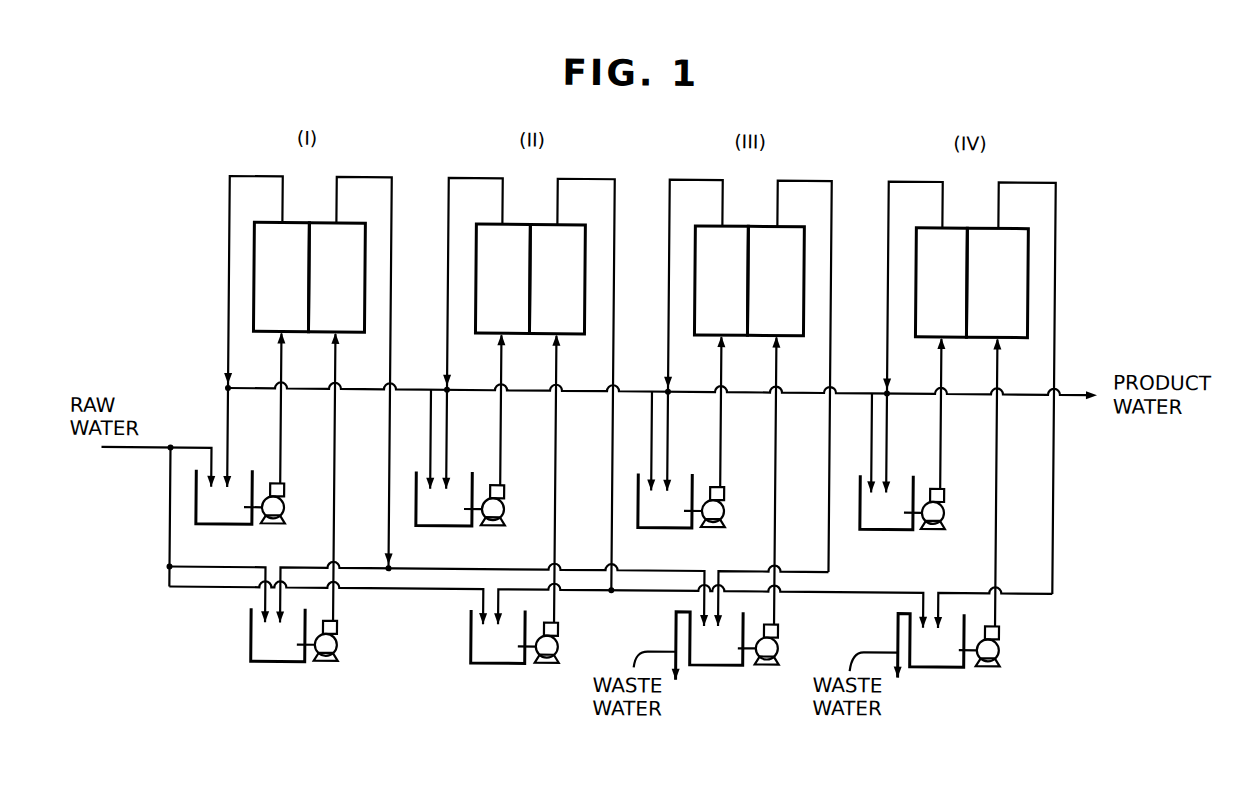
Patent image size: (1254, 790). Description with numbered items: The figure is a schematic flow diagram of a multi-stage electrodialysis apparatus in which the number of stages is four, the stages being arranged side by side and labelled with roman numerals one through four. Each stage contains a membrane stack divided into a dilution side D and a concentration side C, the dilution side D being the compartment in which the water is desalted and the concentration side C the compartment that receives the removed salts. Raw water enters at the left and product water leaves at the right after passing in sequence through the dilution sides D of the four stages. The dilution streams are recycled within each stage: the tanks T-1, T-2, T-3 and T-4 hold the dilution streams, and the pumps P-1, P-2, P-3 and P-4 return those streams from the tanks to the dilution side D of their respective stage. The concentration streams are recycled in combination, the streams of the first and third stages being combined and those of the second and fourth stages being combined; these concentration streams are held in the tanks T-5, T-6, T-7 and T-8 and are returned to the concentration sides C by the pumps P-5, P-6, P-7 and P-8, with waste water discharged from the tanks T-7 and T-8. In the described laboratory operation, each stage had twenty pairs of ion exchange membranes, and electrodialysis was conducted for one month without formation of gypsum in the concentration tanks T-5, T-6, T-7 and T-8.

The dilution side D is at (610, 279).
The concentration side C is at (668, 280).
The tank T-1 is at (224, 511).
The tank T-2 is at (444, 513).
The tank T-3 is at (665, 514).
The tank T-4 is at (887, 516).
The tank T-5 is at (277, 649).
The tank T-6 is at (497, 652).
The tank T-7 is at (709, 653).
The tank T-8 is at (930, 656).
The pump P-1 is at (281, 504).
The pump P-2 is at (502, 507).
The pump P-3 is at (722, 508).
The pump P-4 is at (943, 510).
The pump P-5 is at (336, 643).
The pump P-6 is at (559, 643).
The pump P-7 is at (776, 645).
The pump P-8 is at (999, 647).